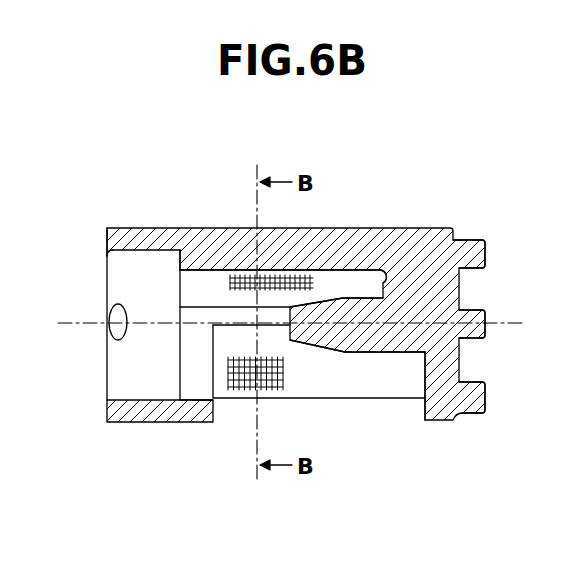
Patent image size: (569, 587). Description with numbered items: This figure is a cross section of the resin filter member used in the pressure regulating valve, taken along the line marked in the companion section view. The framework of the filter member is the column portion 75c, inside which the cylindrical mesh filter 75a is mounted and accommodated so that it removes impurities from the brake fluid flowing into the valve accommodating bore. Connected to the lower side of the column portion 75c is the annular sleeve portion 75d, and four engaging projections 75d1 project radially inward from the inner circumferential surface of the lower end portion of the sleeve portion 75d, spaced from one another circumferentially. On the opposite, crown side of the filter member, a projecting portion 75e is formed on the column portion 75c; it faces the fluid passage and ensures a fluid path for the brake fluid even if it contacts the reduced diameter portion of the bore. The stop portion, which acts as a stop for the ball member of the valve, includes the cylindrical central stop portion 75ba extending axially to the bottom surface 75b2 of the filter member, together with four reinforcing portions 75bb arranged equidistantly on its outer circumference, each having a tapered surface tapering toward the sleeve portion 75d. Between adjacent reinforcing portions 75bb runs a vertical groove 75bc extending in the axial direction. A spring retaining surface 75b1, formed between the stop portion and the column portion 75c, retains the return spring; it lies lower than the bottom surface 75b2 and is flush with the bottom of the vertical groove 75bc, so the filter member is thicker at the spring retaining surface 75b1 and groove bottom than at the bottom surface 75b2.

The filter 75a is at (297, 385).
The spring retaining surface 75b1 is at (377, 277).
The bottom surface 75b2 is at (425, 372).
The central stop portion 75ba is at (290, 333).
The reinforcing portions 75bb is at (292, 333).
The vertical groove 75bc is at (347, 302).
The column portion 75c is at (209, 245).
The sleeve portion 75d is at (123, 238).
The engaging projections 75d1 is at (117, 308).
The projecting portion 75e is at (487, 253).